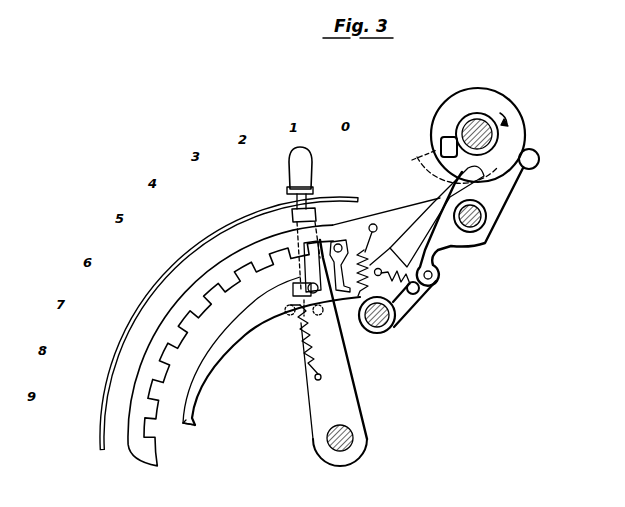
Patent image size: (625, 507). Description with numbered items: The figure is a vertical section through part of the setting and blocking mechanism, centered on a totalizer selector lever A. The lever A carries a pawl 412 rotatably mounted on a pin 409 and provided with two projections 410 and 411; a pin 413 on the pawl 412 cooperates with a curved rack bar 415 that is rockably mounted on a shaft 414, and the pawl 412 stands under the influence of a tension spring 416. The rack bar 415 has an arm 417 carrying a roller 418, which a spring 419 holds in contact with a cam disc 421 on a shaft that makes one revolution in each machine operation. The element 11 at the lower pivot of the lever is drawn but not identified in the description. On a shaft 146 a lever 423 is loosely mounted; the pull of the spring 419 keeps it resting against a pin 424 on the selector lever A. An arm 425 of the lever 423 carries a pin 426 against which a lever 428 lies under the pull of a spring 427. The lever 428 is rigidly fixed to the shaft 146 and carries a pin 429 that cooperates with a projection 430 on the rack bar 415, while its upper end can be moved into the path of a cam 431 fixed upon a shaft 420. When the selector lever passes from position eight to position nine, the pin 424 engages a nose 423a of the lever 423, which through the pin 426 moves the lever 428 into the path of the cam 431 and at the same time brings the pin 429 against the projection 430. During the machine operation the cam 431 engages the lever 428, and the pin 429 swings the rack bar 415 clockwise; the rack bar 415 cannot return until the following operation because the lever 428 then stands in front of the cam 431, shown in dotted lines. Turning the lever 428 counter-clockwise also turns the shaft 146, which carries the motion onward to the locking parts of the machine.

The totalizer selector lever A is at (306, 163).
The pivot 11 is at (357, 451).
The shaft 146 is at (375, 331).
The pin 409 is at (300, 320).
The projection 410 is at (298, 292).
The projection 411 is at (306, 280).
The pawl 412 is at (365, 250).
The pin 413 is at (339, 262).
The shaft 414 is at (481, 222).
The curved rack bar 415 is at (215, 278).
The tension spring 416 is at (300, 359).
The arm 417 is at (507, 190).
The roller 418 is at (539, 159).
The spring 419 is at (381, 260).
The shaft 420 is at (478, 123).
The cam disc 421 is at (514, 123).
The lever 423 is at (237, 343).
The nose 423a is at (195, 428).
The pin 424 is at (298, 298).
The arm 425 is at (411, 303).
The pin 426 is at (414, 285).
The spring 427 is at (413, 304).
The lever 428 is at (444, 190).
The pin 429 is at (440, 277).
The projection 430 is at (424, 262).
The cam 431 is at (447, 142).